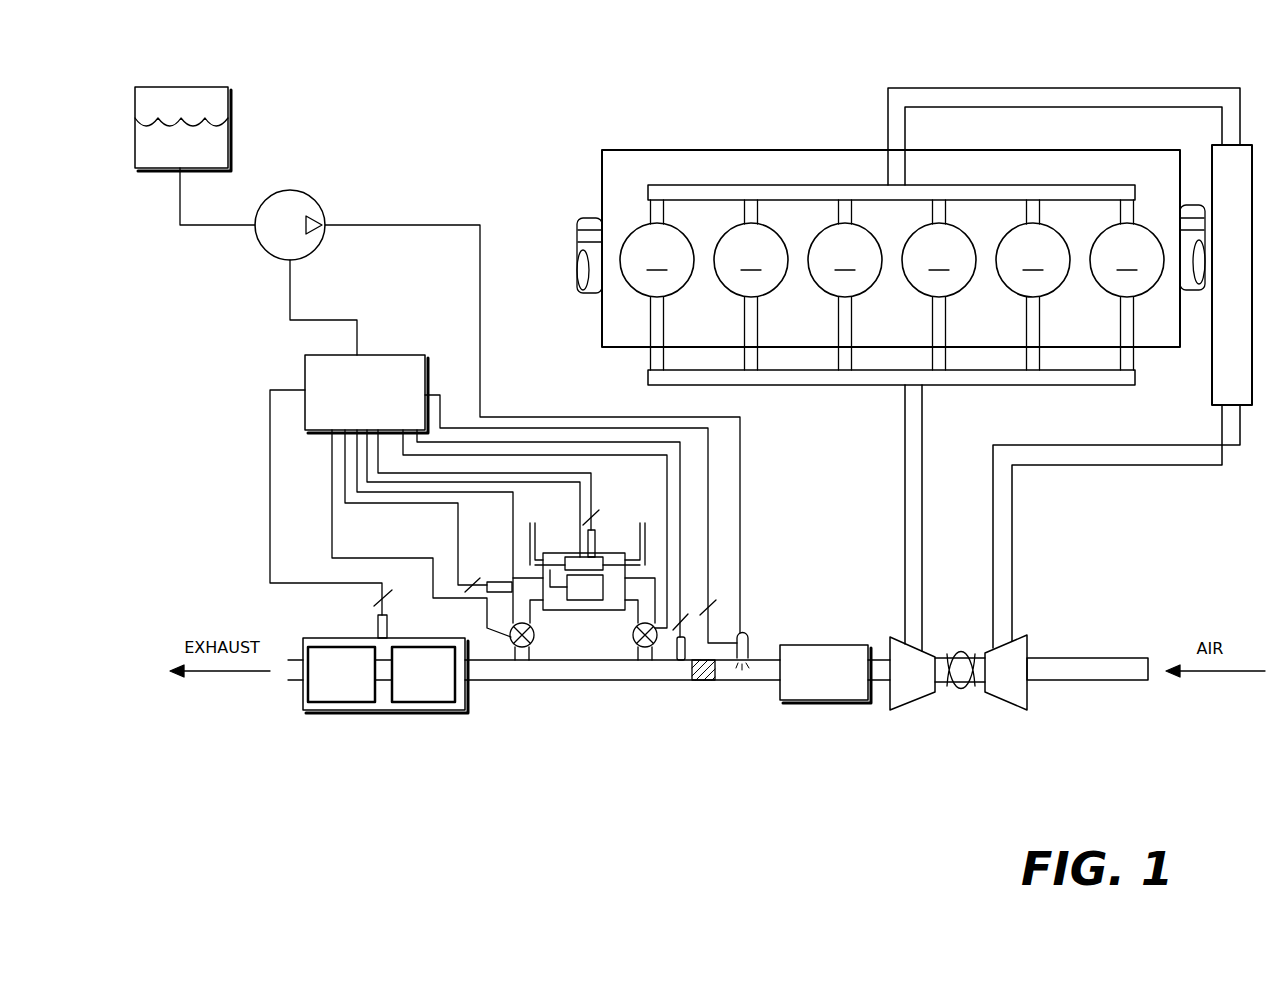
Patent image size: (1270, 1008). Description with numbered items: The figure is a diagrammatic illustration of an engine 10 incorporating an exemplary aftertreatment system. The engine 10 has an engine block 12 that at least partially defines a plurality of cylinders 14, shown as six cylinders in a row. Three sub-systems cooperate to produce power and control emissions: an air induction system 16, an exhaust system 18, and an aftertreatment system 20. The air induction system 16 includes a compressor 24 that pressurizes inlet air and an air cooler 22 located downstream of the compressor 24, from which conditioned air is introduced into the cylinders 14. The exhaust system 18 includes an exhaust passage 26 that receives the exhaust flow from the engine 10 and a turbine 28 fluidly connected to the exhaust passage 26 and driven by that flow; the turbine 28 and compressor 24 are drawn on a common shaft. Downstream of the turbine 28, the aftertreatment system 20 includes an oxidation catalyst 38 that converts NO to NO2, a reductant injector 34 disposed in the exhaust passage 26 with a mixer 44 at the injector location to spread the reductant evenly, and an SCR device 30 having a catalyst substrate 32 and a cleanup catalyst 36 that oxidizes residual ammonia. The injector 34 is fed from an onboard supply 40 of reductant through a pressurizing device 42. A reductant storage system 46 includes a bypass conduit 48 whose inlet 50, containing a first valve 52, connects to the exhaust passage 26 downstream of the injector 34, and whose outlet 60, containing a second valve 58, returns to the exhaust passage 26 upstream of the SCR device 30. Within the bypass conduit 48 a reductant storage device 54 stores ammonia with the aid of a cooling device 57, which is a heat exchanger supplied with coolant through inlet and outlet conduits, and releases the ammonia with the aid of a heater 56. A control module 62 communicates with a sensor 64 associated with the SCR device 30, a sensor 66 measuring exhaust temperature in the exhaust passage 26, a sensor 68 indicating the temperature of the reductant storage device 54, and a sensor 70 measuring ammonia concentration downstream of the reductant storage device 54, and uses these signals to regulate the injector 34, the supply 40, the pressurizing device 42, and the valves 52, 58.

The engine 10 is at (501, 152).
The engine block 12 is at (615, 178).
The cylinders 14 is at (892, 285).
The air induction system 16 is at (1083, 523).
The exhaust system 18 is at (287, 805).
The aftertreatment system 20 is at (308, 745).
The air cooler 22 is at (1222, 278).
The compressor 24 is at (1027, 700).
The exhaust passage 26 is at (905, 468).
The turbine 28 is at (890, 637).
The Selective Catalytic Reduction (SCR) device 30 is at (385, 648).
The catalyst substrate 32 is at (413, 681).
The reductant injector 34 is at (750, 640).
The cleanup catalyst 36 is at (331, 681).
The oxidation catalyst 38 is at (813, 679).
The supply 40 is at (170, 155).
The pressurizing device 42 is at (267, 235).
The mixer 44 is at (703, 680).
The reductant storage system 46 is at (513, 581).
The bypass conduit 48 is at (645, 553).
The inlet 50 is at (648, 662).
The first valve 52 is at (634, 640).
The reductant storage device 54 is at (570, 612).
The heater 56 is at (590, 598).
The cooling device 57 is at (582, 558).
The second valve 58 is at (510, 637).
The outlet 60 is at (522, 662).
The control module 62 is at (355, 403).
The sensor 64 is at (375, 618).
The sensor 66 is at (686, 632).
The sensor 68 is at (598, 536).
The sensor 70 is at (499, 582).